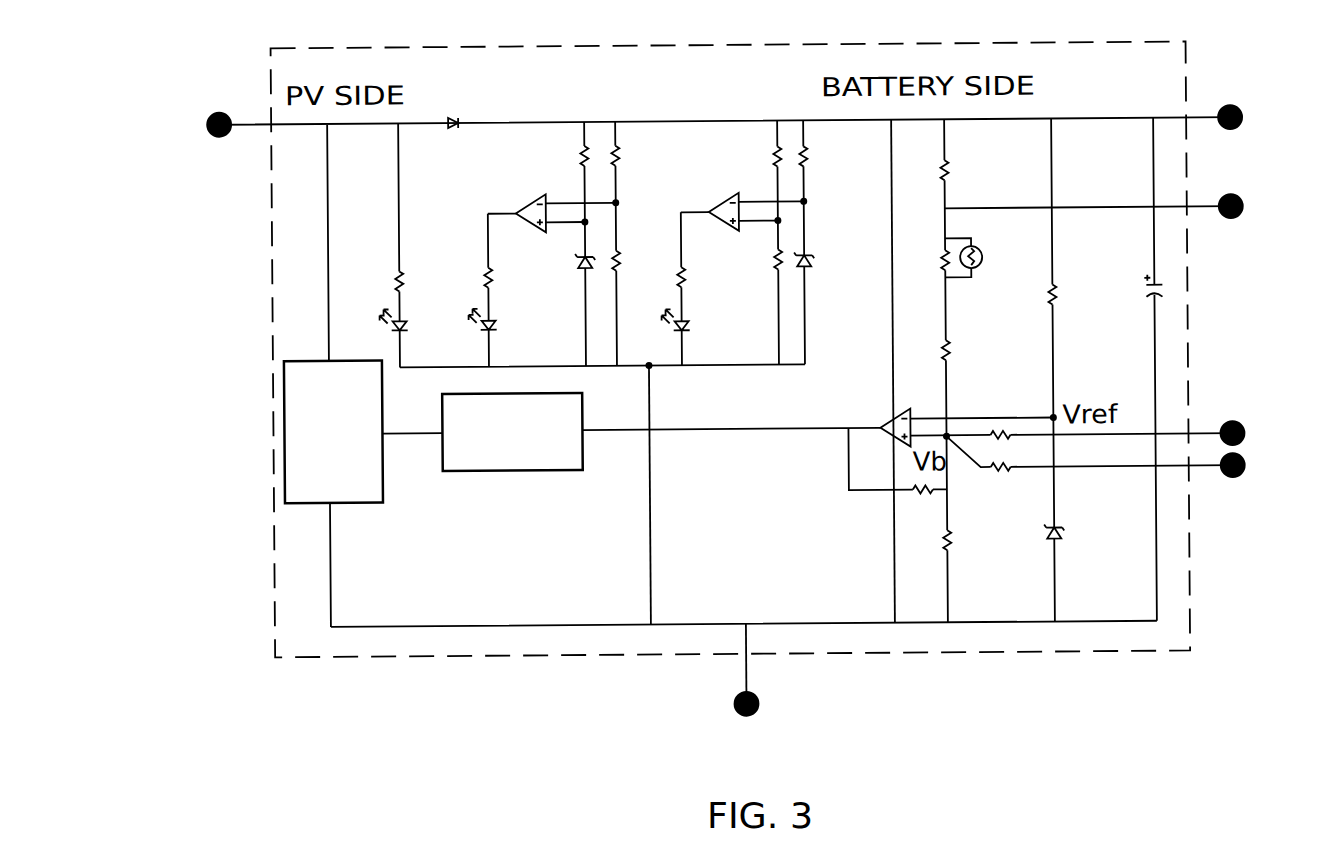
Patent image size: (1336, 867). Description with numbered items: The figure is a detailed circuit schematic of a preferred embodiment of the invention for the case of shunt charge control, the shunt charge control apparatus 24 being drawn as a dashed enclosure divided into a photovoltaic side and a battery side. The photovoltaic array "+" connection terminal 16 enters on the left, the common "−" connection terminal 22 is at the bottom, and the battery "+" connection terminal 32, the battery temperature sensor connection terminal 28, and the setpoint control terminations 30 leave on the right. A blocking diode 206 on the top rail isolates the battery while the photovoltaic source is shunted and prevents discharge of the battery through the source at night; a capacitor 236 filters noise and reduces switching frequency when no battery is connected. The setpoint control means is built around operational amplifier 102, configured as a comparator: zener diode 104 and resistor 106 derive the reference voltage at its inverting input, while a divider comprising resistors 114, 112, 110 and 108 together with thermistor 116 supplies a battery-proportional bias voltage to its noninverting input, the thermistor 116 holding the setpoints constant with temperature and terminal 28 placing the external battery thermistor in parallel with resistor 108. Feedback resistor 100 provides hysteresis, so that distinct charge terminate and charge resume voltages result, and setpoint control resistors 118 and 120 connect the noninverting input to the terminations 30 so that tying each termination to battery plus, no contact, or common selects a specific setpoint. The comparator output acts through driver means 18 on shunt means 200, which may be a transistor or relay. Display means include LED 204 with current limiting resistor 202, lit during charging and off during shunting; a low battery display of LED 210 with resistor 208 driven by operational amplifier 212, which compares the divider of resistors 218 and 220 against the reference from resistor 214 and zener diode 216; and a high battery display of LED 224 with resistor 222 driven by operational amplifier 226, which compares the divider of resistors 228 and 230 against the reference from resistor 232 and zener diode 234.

The photovoltaic array "+" connection terminal 16 is at (210, 111).
The driver means 18 is at (545, 478).
The common "−" connection terminal 22 is at (733, 708).
The shunt charge control apparatus 24 is at (605, 43).
The battery temperature sensor connection terminal 28 is at (1244, 198).
The charge voltage setpoint control terminations 30 is at (1247, 421).
The battery "+" connection terminal 32 is at (1244, 108).
The feedback resistor 100 is at (913, 500).
The operational amplifier 102 is at (885, 420).
The zener diode 104 is at (1068, 538).
The resistor 106 is at (1060, 298).
The resistor 108 is at (955, 168).
The resistor 110 is at (940, 265).
The resistor 112 is at (955, 352).
The resistor 114 is at (955, 542).
The thermistor 116 is at (988, 253).
The setpoint control resistor 118 is at (1012, 432).
The setpoint control resistor 120 is at (1022, 490).
The shunt means 200 is at (385, 506).
The current limiting resistor 202 is at (397, 270).
The LED 204 is at (406, 331).
The blocking diode 206 is at (458, 110).
The current limiting resistor 208 is at (486, 266).
The LED 210 is at (497, 331).
The operational amplifier 212 is at (530, 203).
The resistor 214 is at (580, 152).
The zener diode 216 is at (580, 268).
The resistor 218 is at (623, 155).
The resistor 220 is at (637, 252).
The current limiting resistor 222 is at (688, 281).
The LED 224 is at (690, 332).
The operational amplifier 226 is at (722, 205).
The resistor 228 is at (773, 152).
The resistor 230 is at (773, 262).
The resistor 232 is at (815, 152).
The zener diode 234 is at (815, 252).
The capacitor 236 is at (1145, 285).